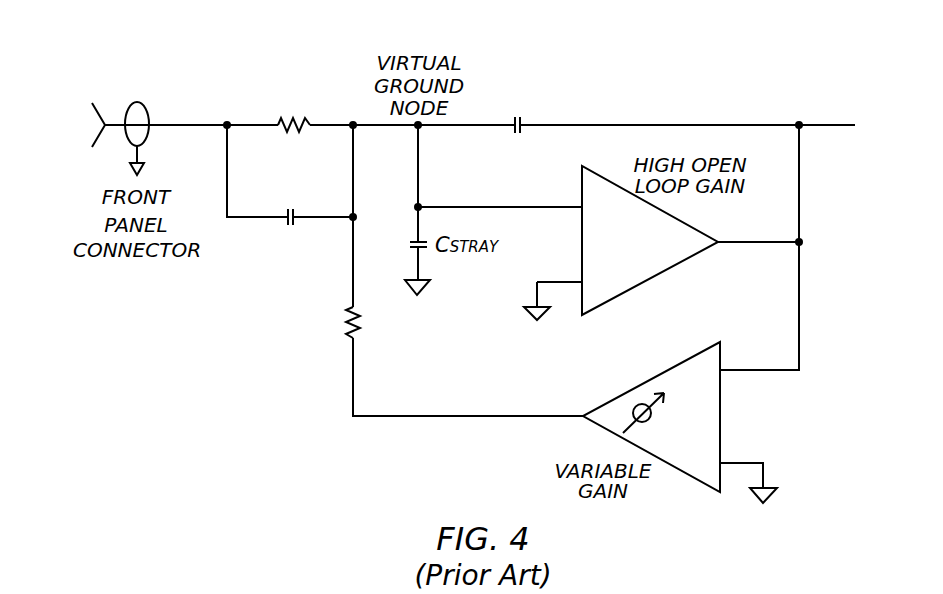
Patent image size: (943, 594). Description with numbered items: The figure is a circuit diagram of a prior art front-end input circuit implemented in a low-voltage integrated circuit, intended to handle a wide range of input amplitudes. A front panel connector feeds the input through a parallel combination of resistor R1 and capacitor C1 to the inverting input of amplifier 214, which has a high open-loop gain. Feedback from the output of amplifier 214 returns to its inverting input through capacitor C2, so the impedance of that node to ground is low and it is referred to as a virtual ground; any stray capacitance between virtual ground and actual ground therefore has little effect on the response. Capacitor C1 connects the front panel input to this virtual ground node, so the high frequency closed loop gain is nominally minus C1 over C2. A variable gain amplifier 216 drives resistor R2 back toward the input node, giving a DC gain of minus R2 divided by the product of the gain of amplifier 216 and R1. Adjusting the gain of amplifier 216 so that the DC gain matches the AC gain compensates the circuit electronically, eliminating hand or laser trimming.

The amplifier 214 is at (637, 287).
The amplifier 216 is at (648, 378).
The resistor R1 is at (293, 114).
The resistor R2 is at (368, 322).
The capacitor C1 is at (288, 204).
The capacitor C2 is at (517, 113).